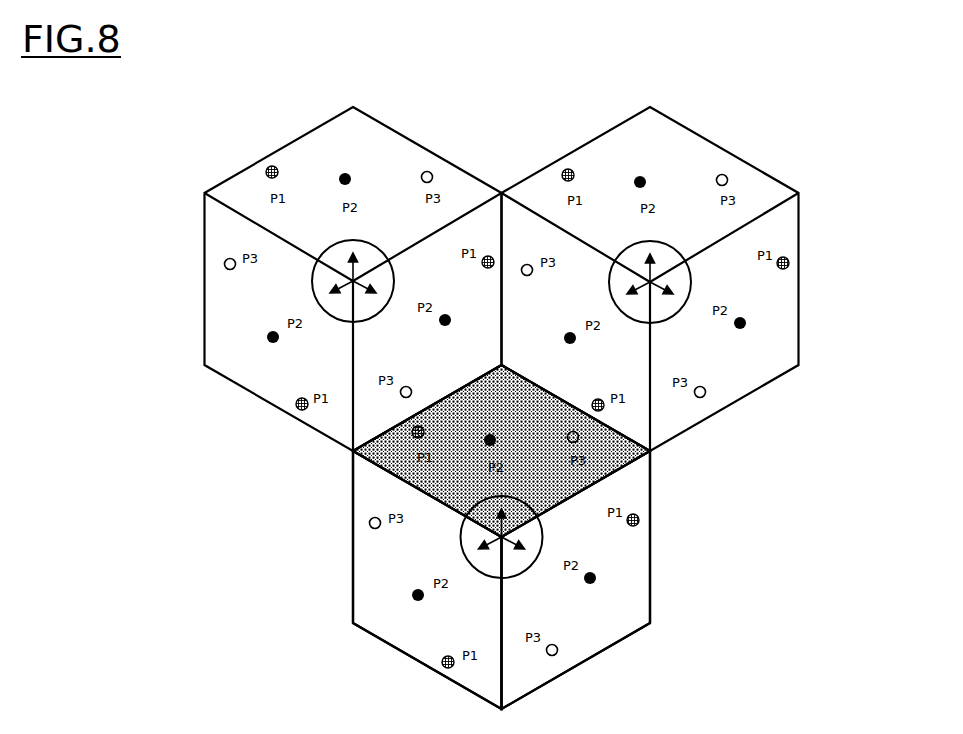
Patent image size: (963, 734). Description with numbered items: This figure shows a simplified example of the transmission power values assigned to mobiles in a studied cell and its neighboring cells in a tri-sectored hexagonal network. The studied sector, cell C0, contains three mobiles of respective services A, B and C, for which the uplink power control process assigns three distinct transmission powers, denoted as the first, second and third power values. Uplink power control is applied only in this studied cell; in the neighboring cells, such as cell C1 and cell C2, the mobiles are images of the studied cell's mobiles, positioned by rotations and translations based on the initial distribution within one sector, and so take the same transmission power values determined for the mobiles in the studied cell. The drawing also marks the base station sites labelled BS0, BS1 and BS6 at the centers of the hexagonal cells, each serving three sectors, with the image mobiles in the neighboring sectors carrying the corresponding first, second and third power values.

The base station 6 BS6 is at (297, 284).
The base station 1 BS1 is at (719, 287).
The base station 0 BS0 is at (563, 538).
The studied sector (cell) C0 is at (618, 466).
The neighboring cell C1 is at (633, 600).
The neighboring cell C2 is at (383, 555).